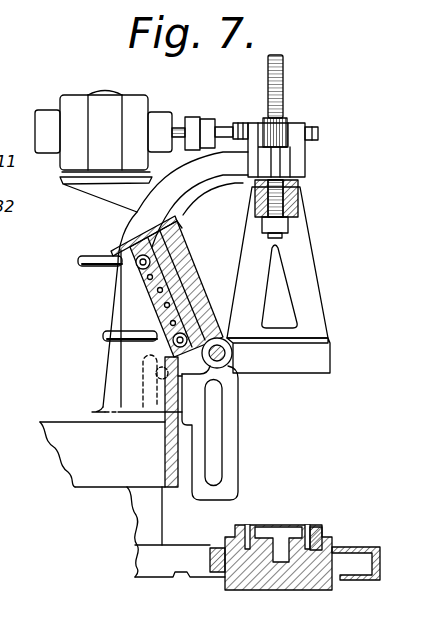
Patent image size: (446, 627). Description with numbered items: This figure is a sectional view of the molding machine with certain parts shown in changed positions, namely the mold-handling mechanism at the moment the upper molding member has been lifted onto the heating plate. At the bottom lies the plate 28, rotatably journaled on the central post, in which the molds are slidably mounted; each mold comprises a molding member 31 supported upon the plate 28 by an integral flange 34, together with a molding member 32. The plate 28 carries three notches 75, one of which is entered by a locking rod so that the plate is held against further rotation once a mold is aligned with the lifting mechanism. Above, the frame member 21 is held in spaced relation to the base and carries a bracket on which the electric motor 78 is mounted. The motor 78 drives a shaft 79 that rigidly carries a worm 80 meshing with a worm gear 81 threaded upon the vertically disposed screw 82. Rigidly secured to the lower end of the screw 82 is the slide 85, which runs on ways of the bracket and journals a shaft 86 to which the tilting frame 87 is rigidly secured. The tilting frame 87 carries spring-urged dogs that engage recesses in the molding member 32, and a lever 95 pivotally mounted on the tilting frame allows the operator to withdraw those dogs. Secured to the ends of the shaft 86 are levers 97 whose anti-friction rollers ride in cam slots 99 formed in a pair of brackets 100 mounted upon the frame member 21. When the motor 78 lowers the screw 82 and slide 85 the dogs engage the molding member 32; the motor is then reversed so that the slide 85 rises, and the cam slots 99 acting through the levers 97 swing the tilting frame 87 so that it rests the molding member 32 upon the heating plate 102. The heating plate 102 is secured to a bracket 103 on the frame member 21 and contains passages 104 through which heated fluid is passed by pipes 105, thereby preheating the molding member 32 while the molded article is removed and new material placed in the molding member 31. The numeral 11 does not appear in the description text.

The electric motor 78 is at (100, 104).
The shaft 79 is at (233, 125).
The worm 80 is at (289, 121).
The worm gear 81 is at (320, 133).
The screw 82 is at (284, 83).
The slide 85 is at (300, 286).
The shaft 86 is at (233, 352).
The tilting frame 87 is at (182, 224).
The lever 95 is at (120, 250).
The lever 97 is at (198, 378).
The cam slot 99 is at (217, 440).
The bracket 100 is at (238, 433).
The heating plate 102 is at (132, 268).
The bracket 103 is at (152, 305).
The passages 104 is at (150, 280).
The pipes 105 is at (82, 257).
The molding member 32 is at (143, 289).
The frame member 21 is at (80, 453).
The notch 75 is at (181, 578).
The molding member 31 is at (276, 585).
The flange 34 is at (335, 543).
The plate 28 is at (382, 565).
The frame 11 is at (6, 158).